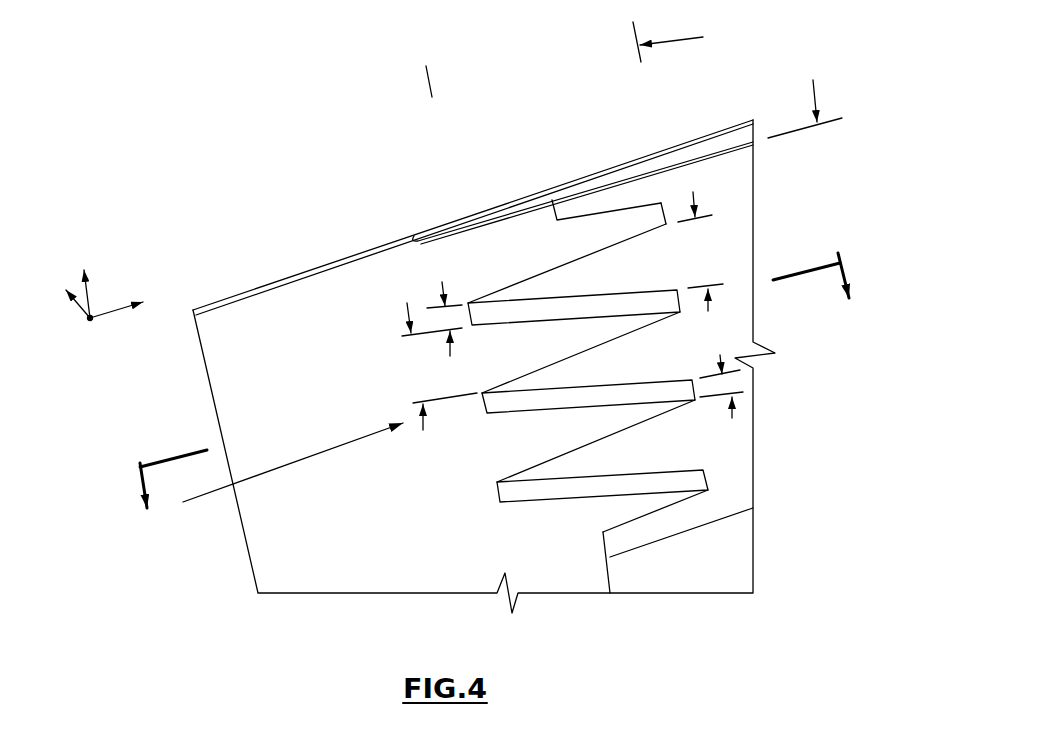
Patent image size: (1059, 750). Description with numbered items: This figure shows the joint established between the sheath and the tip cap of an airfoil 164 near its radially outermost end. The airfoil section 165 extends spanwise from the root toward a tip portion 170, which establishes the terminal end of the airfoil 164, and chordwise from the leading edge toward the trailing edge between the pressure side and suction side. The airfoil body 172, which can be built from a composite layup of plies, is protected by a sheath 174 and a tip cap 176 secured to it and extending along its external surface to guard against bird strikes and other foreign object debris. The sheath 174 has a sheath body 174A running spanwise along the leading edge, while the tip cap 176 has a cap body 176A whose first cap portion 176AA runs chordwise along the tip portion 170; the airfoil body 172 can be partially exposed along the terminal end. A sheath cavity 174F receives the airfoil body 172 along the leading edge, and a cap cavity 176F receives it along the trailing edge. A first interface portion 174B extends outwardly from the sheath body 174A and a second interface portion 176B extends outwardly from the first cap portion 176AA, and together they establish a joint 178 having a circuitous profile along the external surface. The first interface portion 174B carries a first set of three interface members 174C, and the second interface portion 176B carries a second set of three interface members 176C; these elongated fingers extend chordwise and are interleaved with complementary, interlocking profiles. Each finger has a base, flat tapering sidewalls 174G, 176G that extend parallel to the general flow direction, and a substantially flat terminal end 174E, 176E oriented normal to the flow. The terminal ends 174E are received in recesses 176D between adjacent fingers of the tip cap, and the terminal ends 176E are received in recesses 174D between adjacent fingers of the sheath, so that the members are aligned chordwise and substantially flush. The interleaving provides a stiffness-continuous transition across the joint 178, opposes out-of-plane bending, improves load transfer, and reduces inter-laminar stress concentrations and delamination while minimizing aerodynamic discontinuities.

The airfoil 164 is at (170, 200).
The airfoil section 165 is at (757, 560).
The tip portion 170 is at (440, 218).
The airfoil body 172 is at (581, 215).
The sheath 174 is at (297, 266).
The sheath body 174A is at (362, 288).
The first interface portion 174B is at (482, 210).
The first set of interface members 174C is at (647, 215).
The recesses 174D is at (514, 282).
The terminal end 174E is at (667, 222).
The sheath cavity 174F is at (466, 214).
The sidewalls 174G is at (673, 473).
The tip cap 176 is at (770, 142).
The cap body 176A is at (760, 187).
The first cap portion 176AA is at (743, 233).
The second interface portion 176B is at (640, 188).
The second set of interface members 176C is at (560, 382).
The recesses 176D is at (608, 210).
The terminal end 176E is at (495, 482).
The cap cavity 176F is at (567, 217).
The sidewalls 176G is at (640, 422).
The joint 178 is at (553, 200).